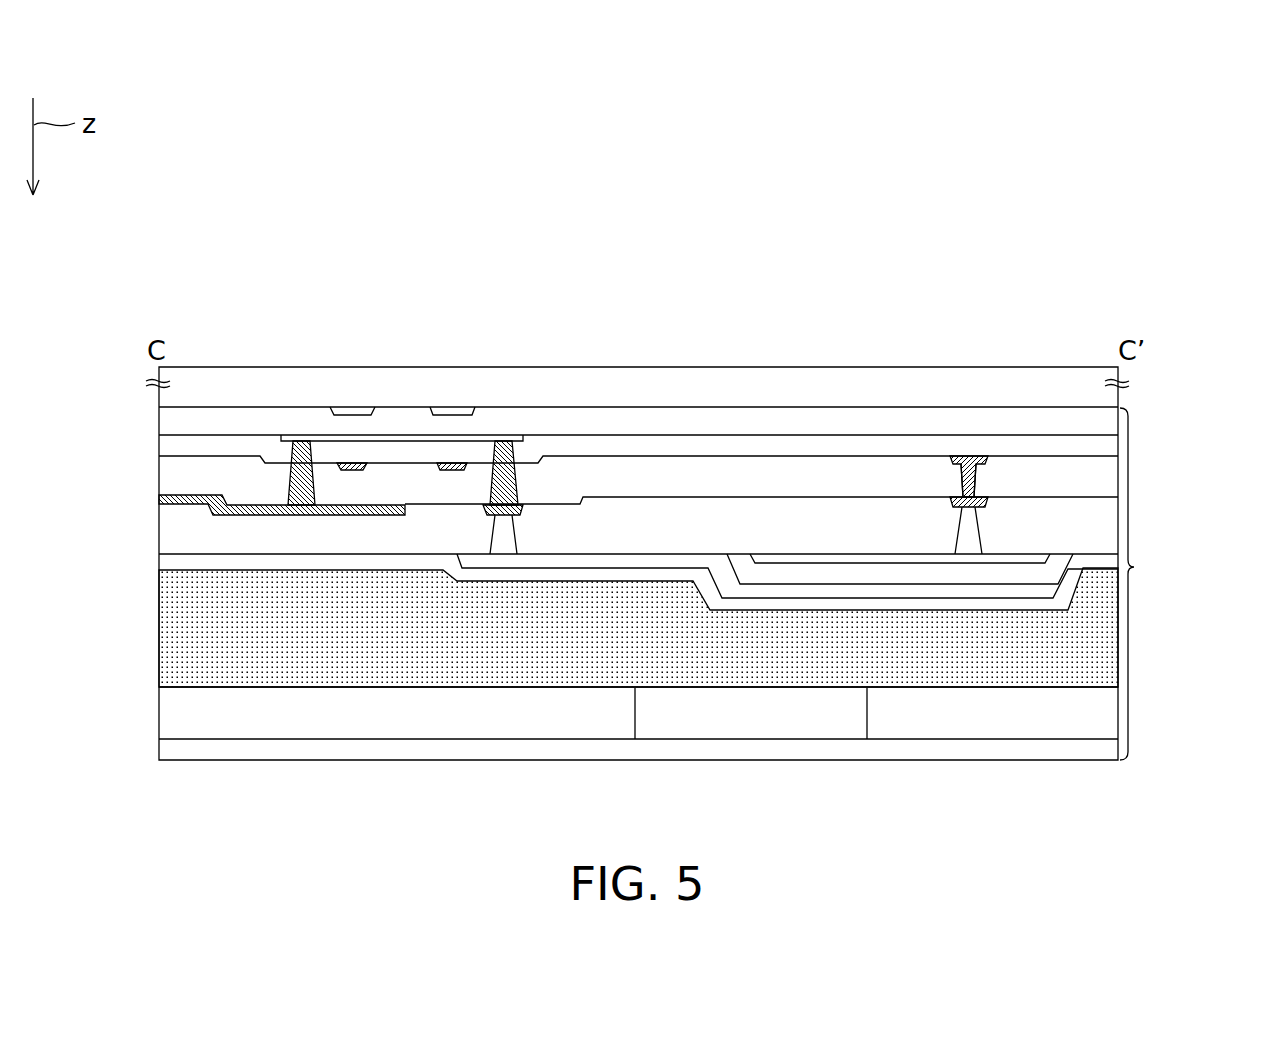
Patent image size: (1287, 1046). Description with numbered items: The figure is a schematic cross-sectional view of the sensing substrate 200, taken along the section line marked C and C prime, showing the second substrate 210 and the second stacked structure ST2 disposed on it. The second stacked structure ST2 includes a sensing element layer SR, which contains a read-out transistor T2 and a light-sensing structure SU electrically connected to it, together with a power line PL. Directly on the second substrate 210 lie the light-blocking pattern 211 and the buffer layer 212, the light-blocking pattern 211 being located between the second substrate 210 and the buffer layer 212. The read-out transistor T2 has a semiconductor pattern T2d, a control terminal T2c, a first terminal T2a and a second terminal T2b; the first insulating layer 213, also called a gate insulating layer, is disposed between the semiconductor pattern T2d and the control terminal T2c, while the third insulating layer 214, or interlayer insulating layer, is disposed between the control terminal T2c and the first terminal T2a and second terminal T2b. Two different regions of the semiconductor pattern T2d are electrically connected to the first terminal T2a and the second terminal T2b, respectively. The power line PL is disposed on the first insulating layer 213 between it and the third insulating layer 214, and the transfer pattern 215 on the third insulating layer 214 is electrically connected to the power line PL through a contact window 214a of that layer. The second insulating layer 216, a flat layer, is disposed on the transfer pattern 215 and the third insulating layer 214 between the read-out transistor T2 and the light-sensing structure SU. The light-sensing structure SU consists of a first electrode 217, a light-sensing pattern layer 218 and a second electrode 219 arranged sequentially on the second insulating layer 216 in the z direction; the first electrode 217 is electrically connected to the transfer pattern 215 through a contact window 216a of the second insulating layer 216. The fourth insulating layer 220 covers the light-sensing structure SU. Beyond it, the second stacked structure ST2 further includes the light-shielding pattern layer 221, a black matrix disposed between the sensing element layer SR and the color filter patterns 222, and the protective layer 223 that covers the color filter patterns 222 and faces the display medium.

The sensing substrate 200 is at (1277, 812).
The second substrate 210 is at (1110, 397).
The light-blocking pattern 211 is at (353, 409).
The buffer layer 212 is at (165, 421).
The first insulating layer 213 is at (165, 447).
The third insulating layer 214 is at (165, 478).
The contact window 214a is at (948, 491).
The transfer pattern 215 is at (1000, 504).
The second insulating layer 216 is at (165, 522).
The contact window 216a is at (946, 542).
The first electrode 217 is at (828, 558).
The light-sensing pattern layer 218 is at (792, 572).
The second electrode 219 is at (750, 590).
The fourth insulating layer 220 is at (165, 562).
The light-shielding pattern layer 221 is at (175, 628).
The color filter patterns 222 is at (178, 708).
The protective layer 223 is at (170, 748).
The read-out transistor T2 is at (520, 93).
The first terminal T2a is at (303, 440).
The second terminal T2b is at (499, 440).
The control terminal T2c is at (428, 464).
The semiconductor pattern T2d is at (384, 436).
The power line PL is at (968, 457).
The light-sensing structure SU is at (643, 105).
The sensing element layer SR is at (195, 23).
The second stacked structure ST2 is at (1148, 584).